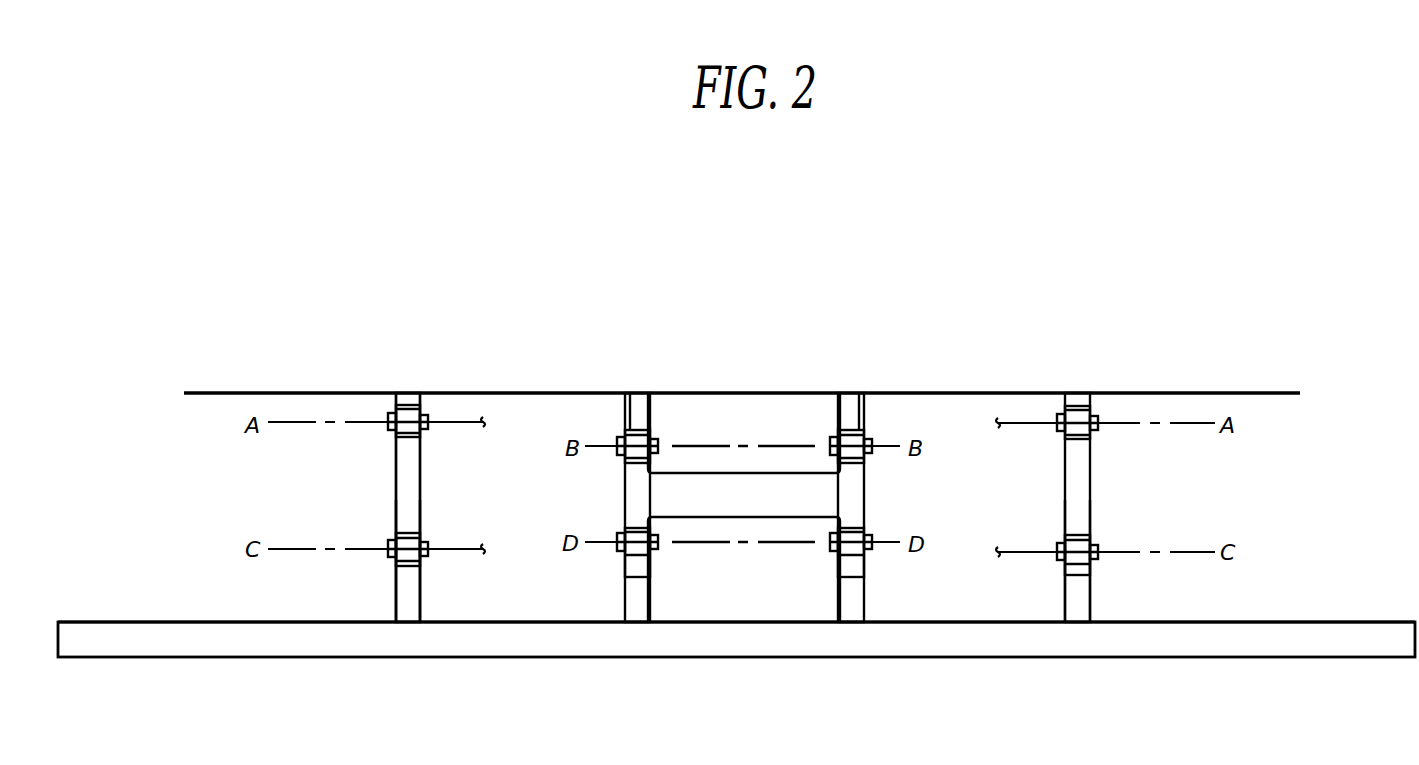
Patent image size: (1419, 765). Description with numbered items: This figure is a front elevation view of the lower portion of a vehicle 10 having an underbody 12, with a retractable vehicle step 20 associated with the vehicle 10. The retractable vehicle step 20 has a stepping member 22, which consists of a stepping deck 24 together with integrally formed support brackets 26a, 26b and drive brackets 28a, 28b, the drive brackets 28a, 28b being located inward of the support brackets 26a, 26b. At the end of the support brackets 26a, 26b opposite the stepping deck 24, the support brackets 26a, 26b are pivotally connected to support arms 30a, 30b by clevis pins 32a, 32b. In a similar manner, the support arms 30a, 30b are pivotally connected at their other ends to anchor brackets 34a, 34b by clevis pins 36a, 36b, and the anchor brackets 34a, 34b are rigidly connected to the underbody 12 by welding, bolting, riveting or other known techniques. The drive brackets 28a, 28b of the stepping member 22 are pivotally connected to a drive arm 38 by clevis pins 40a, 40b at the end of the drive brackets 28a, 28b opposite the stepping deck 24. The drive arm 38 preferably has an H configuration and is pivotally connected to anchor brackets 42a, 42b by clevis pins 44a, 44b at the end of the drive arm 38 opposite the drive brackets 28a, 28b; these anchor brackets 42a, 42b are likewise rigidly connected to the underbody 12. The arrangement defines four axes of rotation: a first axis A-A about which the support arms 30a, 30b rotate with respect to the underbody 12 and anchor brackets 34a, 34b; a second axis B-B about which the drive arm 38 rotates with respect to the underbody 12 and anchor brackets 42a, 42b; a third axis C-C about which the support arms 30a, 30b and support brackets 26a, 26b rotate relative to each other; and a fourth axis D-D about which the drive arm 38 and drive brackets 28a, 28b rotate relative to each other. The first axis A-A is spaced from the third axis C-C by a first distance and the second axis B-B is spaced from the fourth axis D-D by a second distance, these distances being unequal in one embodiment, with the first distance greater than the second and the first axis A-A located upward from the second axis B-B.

The vehicle 10 is at (1028, 268).
The underbody 12 is at (305, 392).
The retractable vehicle step 20 is at (216, 470).
The stepping member 22 is at (219, 666).
The stepping deck 24 is at (138, 620).
The support bracket 26a is at (395, 604).
The support bracket 26b is at (1092, 598).
The drive bracket 28a is at (622, 600).
The drive bracket 28b is at (866, 592).
The support arm 30a is at (412, 490).
The support arm 30b is at (1065, 495).
The clevis pin 32a is at (432, 560).
The clevis pin 32b is at (1098, 548).
The anchor bracket 34a is at (430, 398).
The anchor bracket 34b is at (1095, 400).
The clevis pin 36a is at (432, 430).
The clevis pin 36b is at (1098, 432).
The drive arm 38 is at (624, 497).
The clevis pin 40a is at (658, 542).
The clevis pin 40b is at (828, 545).
The anchor bracket 42a is at (652, 400).
The anchor bracket 42b is at (836, 398).
The clevis pin 44a is at (661, 445).
The clevis pin 44b is at (832, 446).